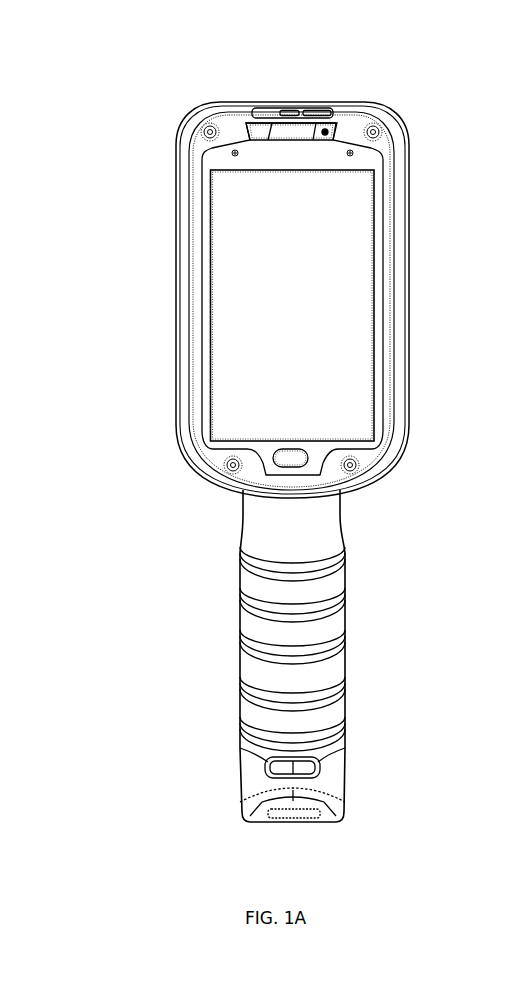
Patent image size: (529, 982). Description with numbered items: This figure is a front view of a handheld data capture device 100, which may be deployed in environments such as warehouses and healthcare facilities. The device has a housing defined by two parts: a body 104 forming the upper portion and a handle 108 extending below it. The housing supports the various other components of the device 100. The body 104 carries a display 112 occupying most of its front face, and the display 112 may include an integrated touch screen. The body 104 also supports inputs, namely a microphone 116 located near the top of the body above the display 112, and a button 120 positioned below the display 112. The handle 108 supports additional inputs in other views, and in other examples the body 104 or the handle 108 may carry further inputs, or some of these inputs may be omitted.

The data capture device 100 is at (214, 95).
The body 104 is at (179, 171).
The handle 108 is at (240, 652).
The display 112 is at (308, 309).
The microphone 116 is at (264, 124).
The button 120 is at (302, 457).